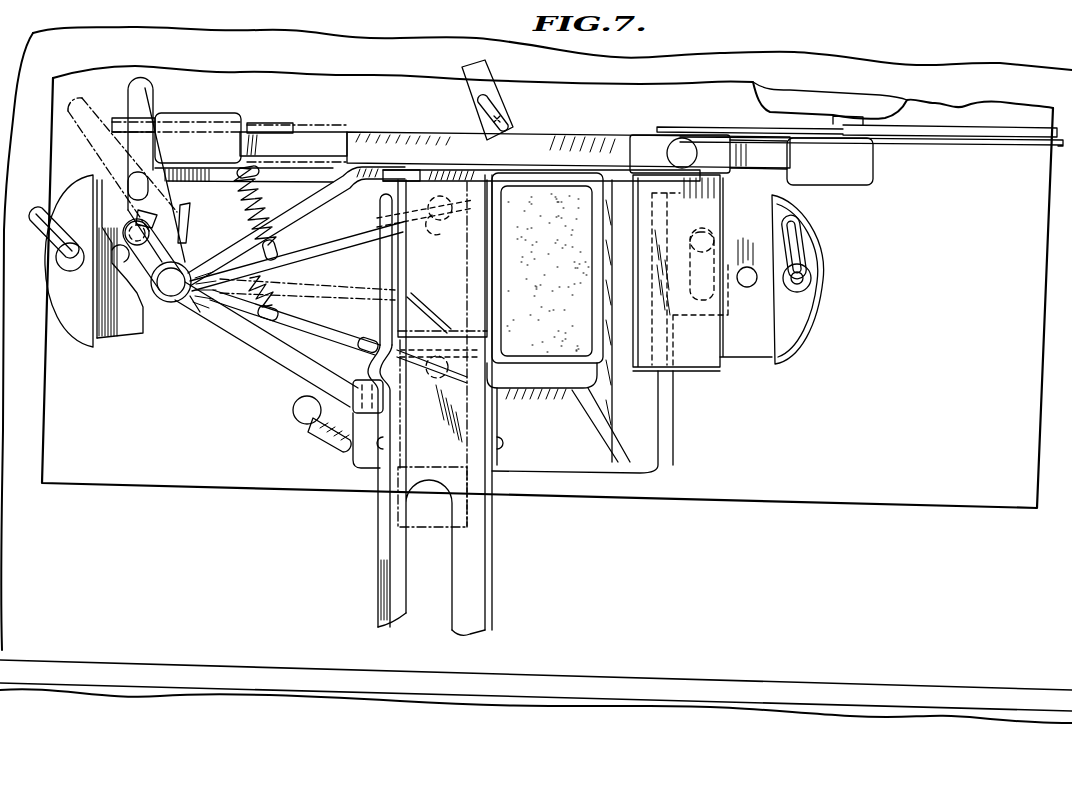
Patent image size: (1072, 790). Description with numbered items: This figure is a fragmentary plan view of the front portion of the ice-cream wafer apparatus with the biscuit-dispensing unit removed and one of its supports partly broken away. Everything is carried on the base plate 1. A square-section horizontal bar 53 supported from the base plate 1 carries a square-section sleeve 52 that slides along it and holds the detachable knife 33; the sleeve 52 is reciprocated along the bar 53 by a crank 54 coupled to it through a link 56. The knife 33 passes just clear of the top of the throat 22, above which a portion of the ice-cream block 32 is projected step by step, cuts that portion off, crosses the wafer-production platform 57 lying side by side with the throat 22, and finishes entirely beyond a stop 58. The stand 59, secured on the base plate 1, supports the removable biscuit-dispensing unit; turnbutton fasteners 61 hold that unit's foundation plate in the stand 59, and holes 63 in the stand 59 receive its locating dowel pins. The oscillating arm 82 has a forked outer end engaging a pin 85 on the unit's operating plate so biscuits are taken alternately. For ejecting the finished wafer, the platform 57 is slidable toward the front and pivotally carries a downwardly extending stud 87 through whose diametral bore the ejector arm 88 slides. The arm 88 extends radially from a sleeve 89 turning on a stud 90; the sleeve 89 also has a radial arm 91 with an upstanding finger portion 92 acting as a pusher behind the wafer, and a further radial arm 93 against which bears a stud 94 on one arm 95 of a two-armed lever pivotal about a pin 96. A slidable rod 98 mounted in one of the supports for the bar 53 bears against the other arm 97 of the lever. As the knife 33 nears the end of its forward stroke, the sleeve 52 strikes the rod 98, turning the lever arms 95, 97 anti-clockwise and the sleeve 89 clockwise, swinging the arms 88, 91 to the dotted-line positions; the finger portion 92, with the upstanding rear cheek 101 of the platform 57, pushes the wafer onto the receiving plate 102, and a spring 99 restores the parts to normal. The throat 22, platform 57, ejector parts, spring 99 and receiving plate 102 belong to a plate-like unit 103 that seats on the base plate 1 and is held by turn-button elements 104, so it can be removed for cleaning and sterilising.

The base plate 1 is at (152, 478).
The throat 22 is at (547, 268).
The ice-cream block 32 is at (590, 310).
The knife 33 is at (710, 355).
The square-section sleeve 52 is at (640, 145).
The square-section horizontal bar 53 is at (568, 140).
The crank 54 is at (992, 126).
The link 56 is at (978, 141).
The wafer-production platform 57 is at (437, 331).
The stop 58 is at (400, 262).
The stand 59 is at (72, 323).
The turnbutton fasteners 61 is at (58, 236).
The holes 63 is at (747, 288).
The arm 82 is at (490, 75).
The pin 85 is at (507, 91).
The stud 87 is at (438, 224).
The ejector arm 88 is at (310, 285).
The sleeve 89 is at (203, 313).
The stud 90 is at (168, 298).
The radial arm 91 is at (300, 238).
The finger portion 92 is at (430, 180).
The radial arm 93 is at (160, 247).
The stud 94 is at (125, 222).
The arm 95 is at (127, 208).
The pin 96 is at (148, 182).
The arm 97 is at (153, 93).
The slidable rod 98 is at (290, 124).
The spring 99 is at (247, 199).
The rear cheek 101 is at (475, 178).
The receiving plate 102 is at (482, 568).
The plate-like unit 103 is at (272, 352).
The turn-button elements 104 is at (305, 428).